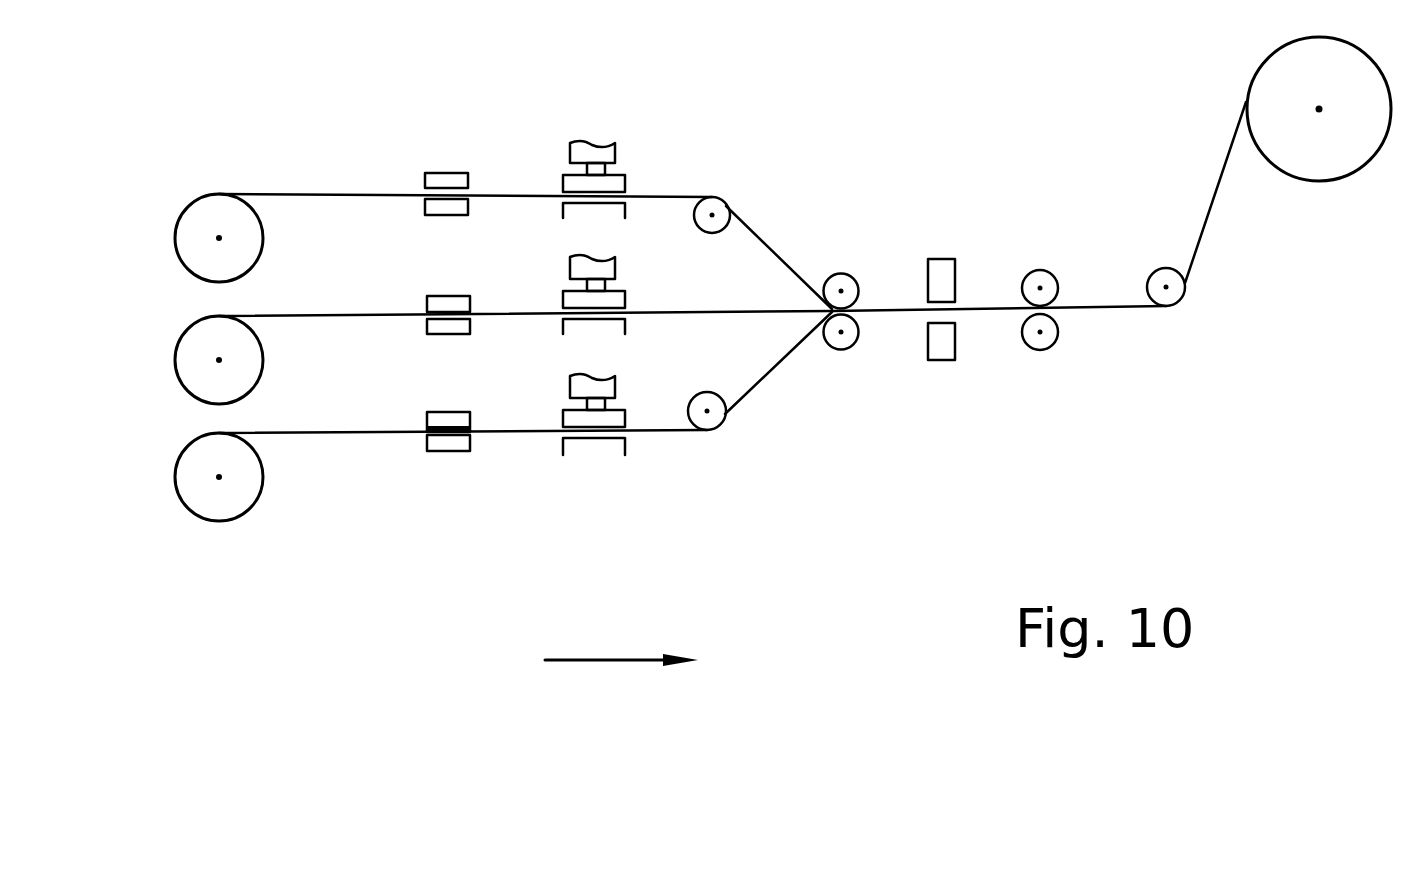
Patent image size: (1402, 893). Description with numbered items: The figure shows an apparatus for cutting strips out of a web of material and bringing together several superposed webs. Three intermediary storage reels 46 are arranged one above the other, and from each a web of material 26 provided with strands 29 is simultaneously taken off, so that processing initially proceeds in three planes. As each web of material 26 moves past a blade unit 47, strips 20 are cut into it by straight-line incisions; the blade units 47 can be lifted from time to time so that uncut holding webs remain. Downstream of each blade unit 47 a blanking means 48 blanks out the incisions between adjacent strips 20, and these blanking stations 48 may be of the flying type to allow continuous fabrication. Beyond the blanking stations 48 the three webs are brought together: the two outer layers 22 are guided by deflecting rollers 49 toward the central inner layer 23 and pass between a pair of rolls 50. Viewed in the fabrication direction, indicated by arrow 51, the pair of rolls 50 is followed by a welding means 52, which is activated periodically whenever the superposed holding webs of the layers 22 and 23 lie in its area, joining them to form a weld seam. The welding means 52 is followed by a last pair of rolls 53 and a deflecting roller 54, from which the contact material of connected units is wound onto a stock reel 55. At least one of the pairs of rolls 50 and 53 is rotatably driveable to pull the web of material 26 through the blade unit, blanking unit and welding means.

The intermediary storage reel 46 is at (197, 212).
The web of material 26 is at (525, 303).
The strand 29 is at (307, 195).
The strip 20 is at (770, 378).
The outer layer 22 is at (1039, 268).
The inner layer 23 is at (1128, 312).
The blade unit 47 is at (433, 180).
The blanking means 48 is at (577, 148).
The deflecting roller 49 is at (726, 213).
The pair of rolls 50 is at (838, 282).
The fabrication direction arrow 51 is at (599, 661).
The welding means 52 is at (940, 270).
The last pair of rolls 53 is at (1058, 345).
The deflecting roller 54 is at (1156, 278).
The stock reel 55 is at (1272, 83).